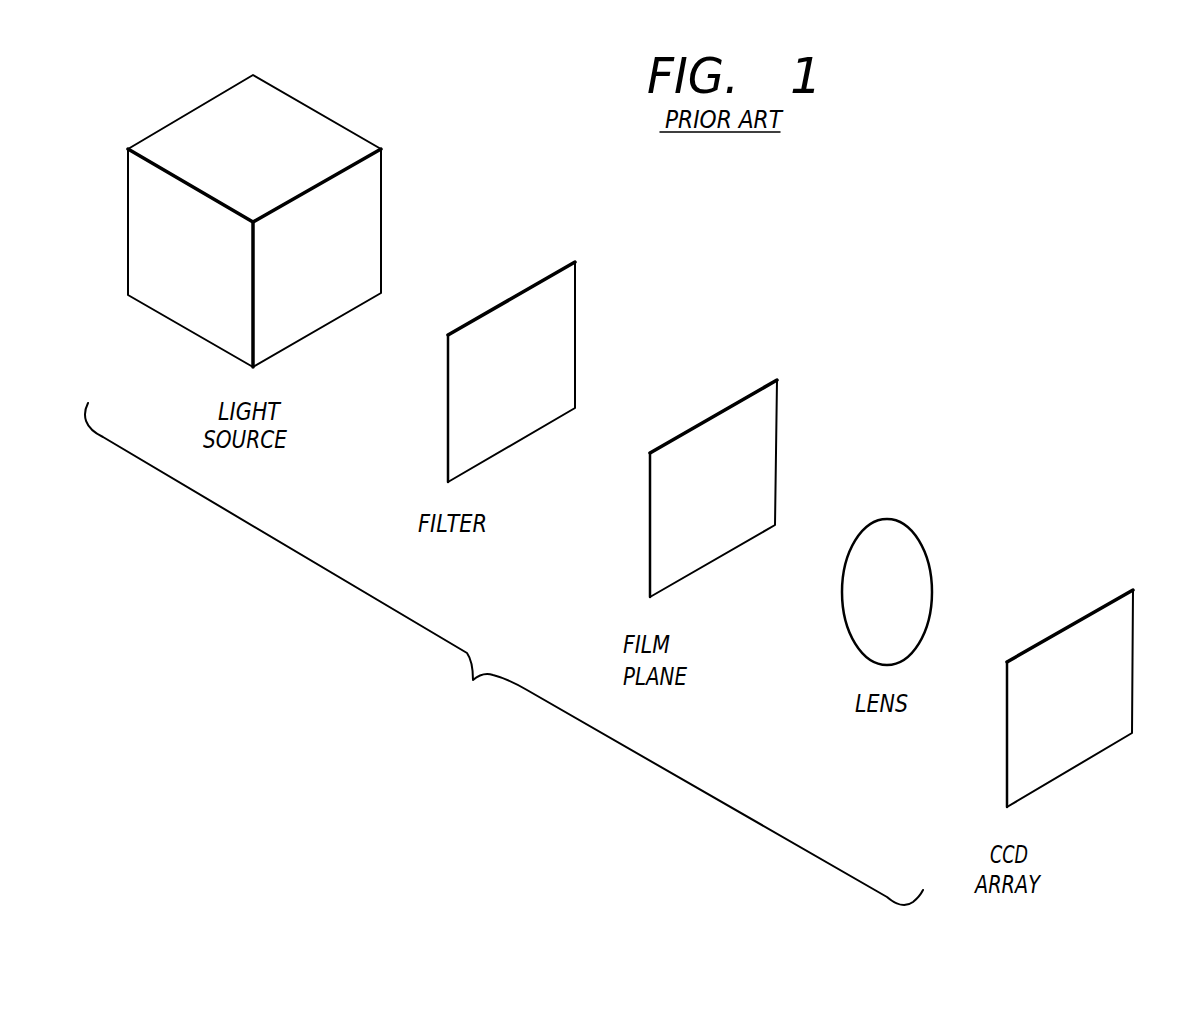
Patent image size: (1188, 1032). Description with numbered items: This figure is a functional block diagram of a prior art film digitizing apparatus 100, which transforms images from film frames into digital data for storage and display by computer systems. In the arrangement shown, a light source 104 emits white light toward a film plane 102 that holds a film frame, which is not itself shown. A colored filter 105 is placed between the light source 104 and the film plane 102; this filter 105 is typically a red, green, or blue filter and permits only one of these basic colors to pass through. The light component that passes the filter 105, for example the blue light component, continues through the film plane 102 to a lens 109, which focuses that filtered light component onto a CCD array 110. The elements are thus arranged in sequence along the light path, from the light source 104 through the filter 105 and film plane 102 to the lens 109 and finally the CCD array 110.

The film digitizing apparatus 100 is at (862, 295).
The light source 104 is at (150, 309).
The colored filter 105 is at (523, 288).
The film plane 102 is at (722, 410).
The lens 109 is at (885, 518).
The CCD array 110 is at (1075, 618).